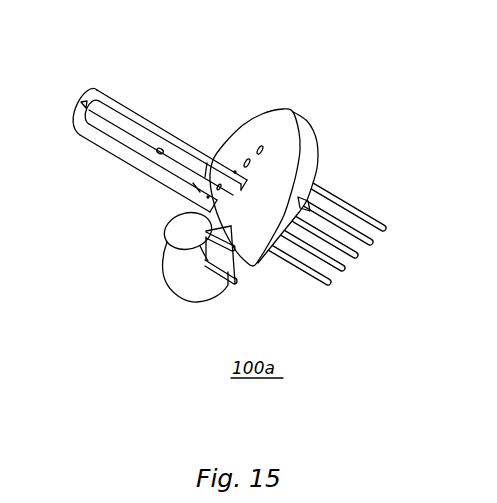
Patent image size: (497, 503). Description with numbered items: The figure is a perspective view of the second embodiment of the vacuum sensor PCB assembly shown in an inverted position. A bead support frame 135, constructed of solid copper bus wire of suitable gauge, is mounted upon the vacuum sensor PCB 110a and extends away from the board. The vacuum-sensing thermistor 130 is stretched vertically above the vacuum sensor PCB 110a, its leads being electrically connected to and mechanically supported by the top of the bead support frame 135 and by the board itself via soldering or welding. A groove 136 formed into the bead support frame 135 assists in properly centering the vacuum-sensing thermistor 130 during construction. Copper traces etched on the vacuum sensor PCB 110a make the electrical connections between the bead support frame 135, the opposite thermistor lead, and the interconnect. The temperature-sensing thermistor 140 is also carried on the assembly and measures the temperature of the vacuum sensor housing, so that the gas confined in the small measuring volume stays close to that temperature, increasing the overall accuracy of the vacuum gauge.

The vacuum sensor PCB 110a is at (311, 156).
The vacuum-sensing thermistor 130 is at (213, 104).
The bead support frame 135 is at (132, 150).
The groove 136 is at (116, 63).
The temperature-sensing thermistor 140 is at (152, 254).